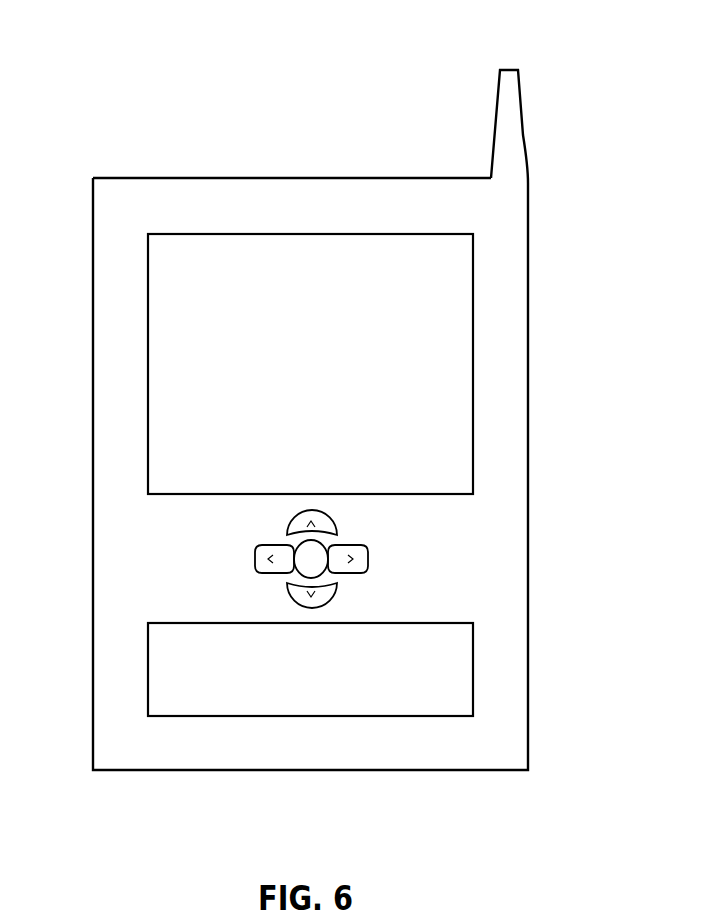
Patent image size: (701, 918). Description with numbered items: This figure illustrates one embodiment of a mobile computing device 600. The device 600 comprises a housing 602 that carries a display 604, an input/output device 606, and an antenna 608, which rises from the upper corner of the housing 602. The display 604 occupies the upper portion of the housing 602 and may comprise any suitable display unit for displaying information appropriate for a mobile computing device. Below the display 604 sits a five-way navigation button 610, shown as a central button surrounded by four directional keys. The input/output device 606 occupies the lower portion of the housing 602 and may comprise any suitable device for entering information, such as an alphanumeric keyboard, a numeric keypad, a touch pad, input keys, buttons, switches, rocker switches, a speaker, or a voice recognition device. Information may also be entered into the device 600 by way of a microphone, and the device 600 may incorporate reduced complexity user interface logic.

The device 600 is at (63, 30).
The housing 602 is at (528, 475).
The display 604 is at (473, 253).
The input/output (I/O) device 606 is at (473, 660).
The antenna 608 is at (495, 118).
The five-way navigation button 610 is at (378, 551).